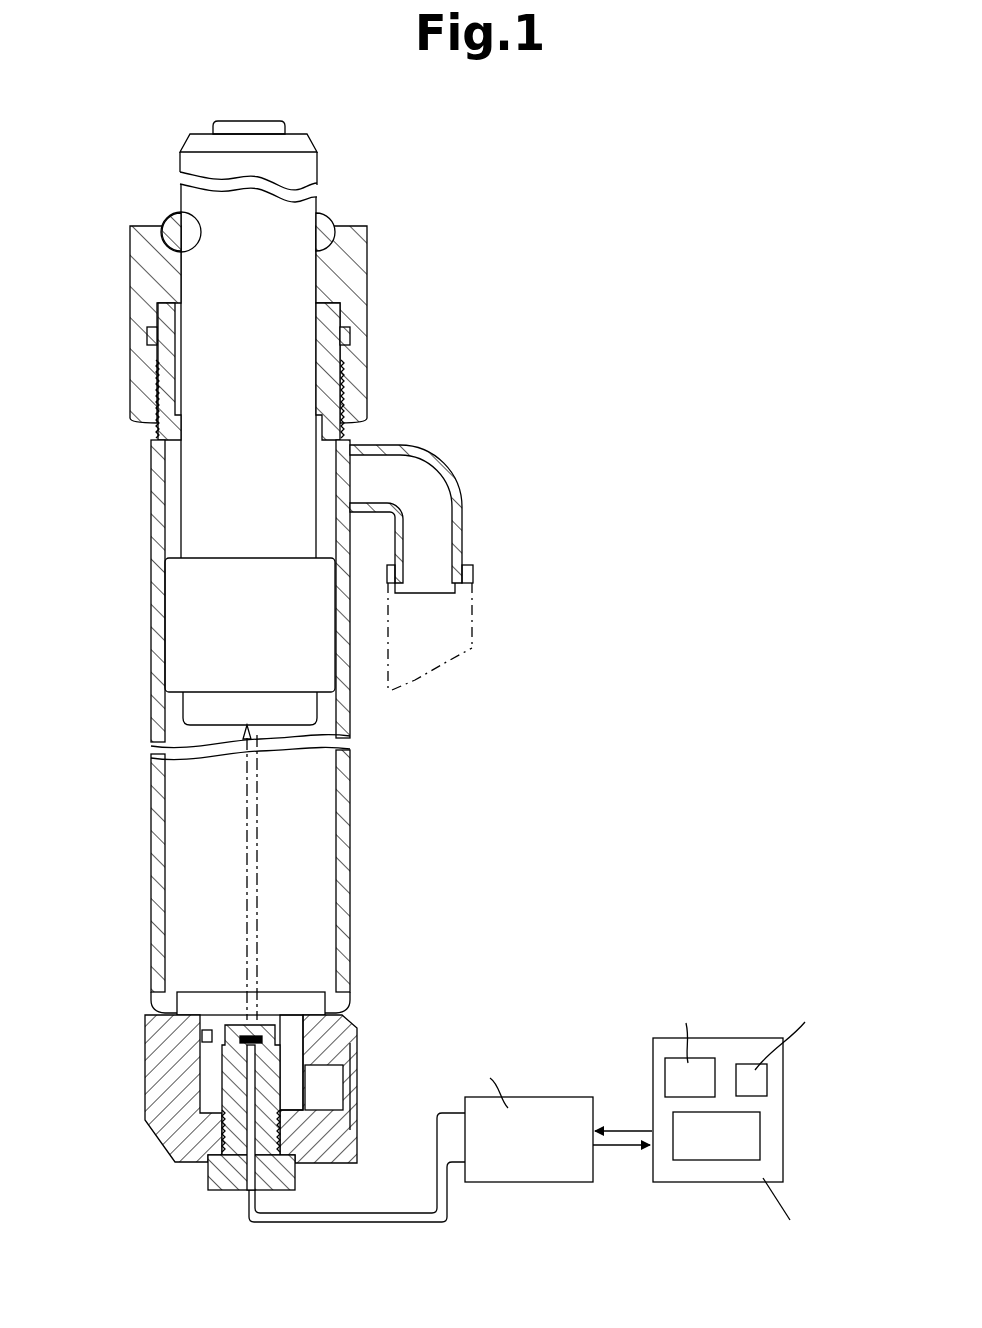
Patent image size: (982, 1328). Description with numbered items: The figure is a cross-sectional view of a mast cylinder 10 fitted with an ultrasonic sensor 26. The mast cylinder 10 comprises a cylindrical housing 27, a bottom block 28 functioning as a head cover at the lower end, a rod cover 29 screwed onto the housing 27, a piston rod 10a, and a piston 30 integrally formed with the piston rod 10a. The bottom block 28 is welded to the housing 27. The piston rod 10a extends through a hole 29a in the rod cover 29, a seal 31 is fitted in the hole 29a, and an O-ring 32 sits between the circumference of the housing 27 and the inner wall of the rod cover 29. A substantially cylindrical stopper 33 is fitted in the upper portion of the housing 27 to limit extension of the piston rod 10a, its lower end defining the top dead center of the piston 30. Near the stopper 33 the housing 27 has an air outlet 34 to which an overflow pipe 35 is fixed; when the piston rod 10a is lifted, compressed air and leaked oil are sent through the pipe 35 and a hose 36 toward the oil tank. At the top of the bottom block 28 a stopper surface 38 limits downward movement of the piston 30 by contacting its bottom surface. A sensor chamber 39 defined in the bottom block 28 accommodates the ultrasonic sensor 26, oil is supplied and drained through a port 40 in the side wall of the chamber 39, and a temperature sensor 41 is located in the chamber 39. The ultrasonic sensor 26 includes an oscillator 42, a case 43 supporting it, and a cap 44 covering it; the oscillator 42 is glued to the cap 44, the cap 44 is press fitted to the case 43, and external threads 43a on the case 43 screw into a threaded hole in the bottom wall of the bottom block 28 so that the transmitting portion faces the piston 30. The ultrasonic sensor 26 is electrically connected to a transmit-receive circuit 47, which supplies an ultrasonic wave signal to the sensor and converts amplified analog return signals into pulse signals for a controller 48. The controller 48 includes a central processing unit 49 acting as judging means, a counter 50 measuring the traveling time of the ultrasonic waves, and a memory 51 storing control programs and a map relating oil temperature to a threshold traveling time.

The mast cylinder 10 is at (126, 496).
The piston rod 10a is at (305, 173).
The ultrasonic sensor 26 is at (231, 1020).
The cylindrical housing 27 is at (157, 603).
The bottom block 28 is at (148, 1057).
The rod cover 29 is at (357, 295).
The hole 29a is at (183, 206).
The piston 30 is at (175, 661).
The seal 31 is at (340, 213).
The O-ring 32 is at (350, 337).
The stopper 33 is at (163, 400).
The air outlet 34 is at (350, 462).
The overflow pipe 35 is at (460, 478).
The hose 36 is at (474, 612).
The stopper surface 38 is at (182, 1000).
The sensor chamber 39 is at (290, 1025).
The port 40 is at (330, 1100).
The temperature sensor 41 is at (200, 1036).
The oscillator 42 is at (259, 1024).
The case 43 is at (213, 1177).
The external threads 43a is at (218, 1128).
The cap 44 is at (225, 1063).
The transmit-receive circuit 47 is at (497, 1175).
The controller 48 is at (649, 1080).
The central processing unit 49 is at (698, 1155).
The counter 50 is at (758, 1078).
The memory 51 is at (673, 1058).